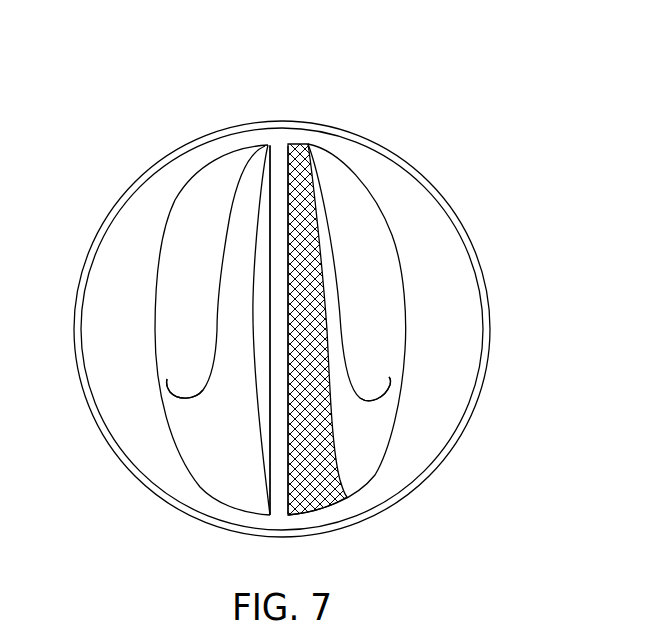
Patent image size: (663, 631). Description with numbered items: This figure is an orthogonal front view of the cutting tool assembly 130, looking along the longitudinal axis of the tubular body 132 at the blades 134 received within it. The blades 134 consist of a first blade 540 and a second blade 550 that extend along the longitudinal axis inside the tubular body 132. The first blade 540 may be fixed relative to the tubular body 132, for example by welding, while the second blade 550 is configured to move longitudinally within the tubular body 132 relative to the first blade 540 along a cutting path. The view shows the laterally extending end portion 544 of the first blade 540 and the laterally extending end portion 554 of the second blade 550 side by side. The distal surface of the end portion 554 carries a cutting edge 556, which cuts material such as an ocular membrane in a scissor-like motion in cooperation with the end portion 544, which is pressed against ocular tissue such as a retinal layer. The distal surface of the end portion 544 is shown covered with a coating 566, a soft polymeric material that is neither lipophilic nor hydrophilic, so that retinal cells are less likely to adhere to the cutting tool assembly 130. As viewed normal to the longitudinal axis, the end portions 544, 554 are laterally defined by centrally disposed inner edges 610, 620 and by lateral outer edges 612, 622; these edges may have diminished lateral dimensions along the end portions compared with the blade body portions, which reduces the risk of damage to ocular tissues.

The cutting tool assembly 130 is at (497, 82).
The tubular body 132 is at (490, 320).
The blades 134 is at (338, 75).
The first blade 540 is at (393, 228).
The end portion 544 is at (342, 313).
The second blade 550 is at (167, 223).
The end portion 554 is at (217, 317).
The cutting edge 556 is at (257, 415).
The coating 566 is at (323, 457).
The inner edge 610 is at (278, 186).
The outer edge 612 is at (358, 360).
The inner edge 620 is at (284, 168).
The outer edge 622 is at (205, 360).